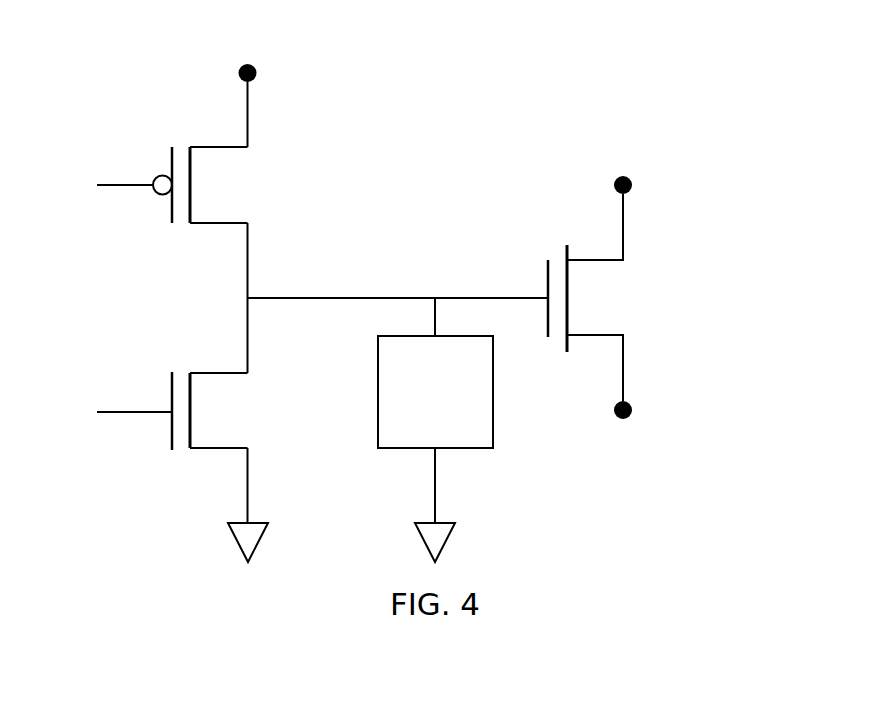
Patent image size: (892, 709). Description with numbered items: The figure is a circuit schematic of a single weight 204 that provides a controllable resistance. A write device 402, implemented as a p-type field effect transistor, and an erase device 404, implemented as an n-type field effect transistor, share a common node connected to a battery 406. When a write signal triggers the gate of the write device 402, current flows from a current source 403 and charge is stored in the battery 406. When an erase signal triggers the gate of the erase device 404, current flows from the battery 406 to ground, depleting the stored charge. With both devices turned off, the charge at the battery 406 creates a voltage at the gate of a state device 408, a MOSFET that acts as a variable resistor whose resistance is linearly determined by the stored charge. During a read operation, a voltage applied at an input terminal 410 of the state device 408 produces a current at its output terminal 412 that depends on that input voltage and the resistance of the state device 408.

The weight 204 is at (157, 84).
The write device 402 is at (228, 186).
The current source 403 is at (257, 72).
The erase device 404 is at (228, 410).
The battery 406 is at (458, 419).
The state device 408 is at (603, 298).
The input terminal 410 is at (632, 184).
The output terminal 412 is at (632, 409).